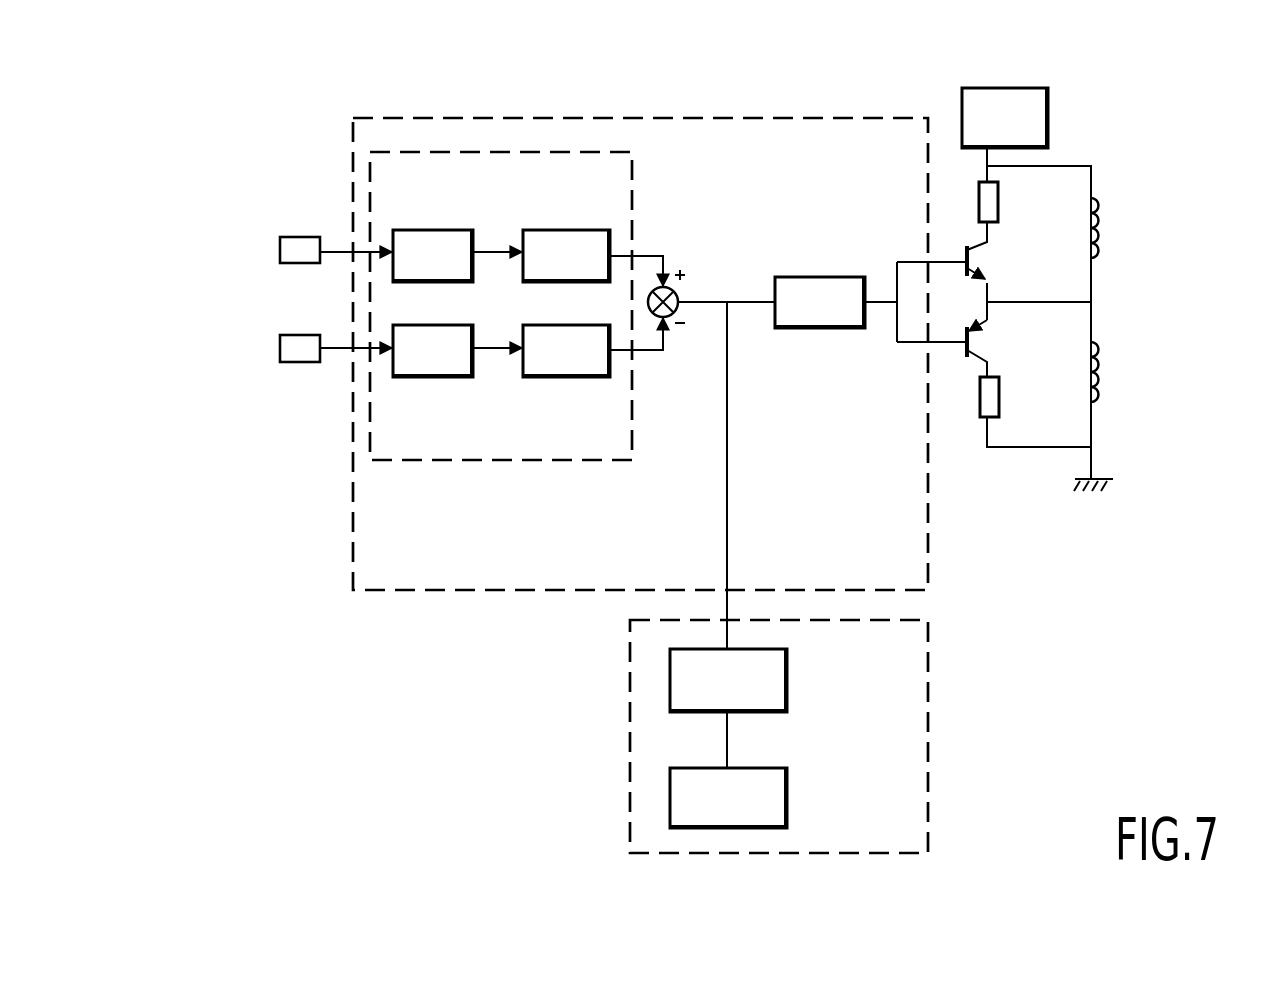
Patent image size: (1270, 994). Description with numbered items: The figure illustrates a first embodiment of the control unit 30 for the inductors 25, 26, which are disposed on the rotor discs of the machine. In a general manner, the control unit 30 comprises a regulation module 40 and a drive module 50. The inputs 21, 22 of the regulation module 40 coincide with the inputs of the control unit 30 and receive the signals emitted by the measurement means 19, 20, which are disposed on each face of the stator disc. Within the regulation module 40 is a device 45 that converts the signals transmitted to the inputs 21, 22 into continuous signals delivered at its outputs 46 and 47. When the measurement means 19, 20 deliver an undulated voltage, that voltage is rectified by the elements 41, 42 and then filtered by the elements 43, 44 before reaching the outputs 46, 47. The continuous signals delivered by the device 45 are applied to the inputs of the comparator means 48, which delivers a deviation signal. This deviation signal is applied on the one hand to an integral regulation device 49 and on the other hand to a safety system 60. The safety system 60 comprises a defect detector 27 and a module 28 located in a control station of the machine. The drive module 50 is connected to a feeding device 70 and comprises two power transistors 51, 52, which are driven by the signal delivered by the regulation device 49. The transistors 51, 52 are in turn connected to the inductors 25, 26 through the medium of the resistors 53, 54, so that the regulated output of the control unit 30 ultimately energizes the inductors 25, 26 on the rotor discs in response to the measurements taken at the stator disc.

The measurement means 19 is at (280, 252).
The measurement means 20 is at (280, 348).
The input 21 is at (350, 247).
The input 22 is at (350, 350).
The inductor 25 is at (1108, 225).
The inductor 26 is at (1108, 380).
The defect detector 27 is at (787, 682).
The module 28 is at (787, 792).
The control unit 30 is at (678, 95).
The regulation module 40 is at (493, 593).
The rectifying element 41 is at (438, 230).
The rectifying element 42 is at (438, 377).
The filtering element 43 is at (562, 230).
The filtering element 44 is at (562, 377).
The conversion device 45 is at (492, 462).
The output 46 is at (633, 253).
The output 47 is at (633, 352).
The comparator means 48 is at (678, 298).
The integral regulation device 49 is at (807, 277).
The drive module 50 is at (1028, 497).
The power transistor 51 is at (965, 246).
The power transistor 52 is at (970, 353).
The resistor 53 is at (998, 202).
The resistor 54 is at (999, 397).
The safety system 60 is at (628, 785).
The feeding device 70 is at (1048, 117).